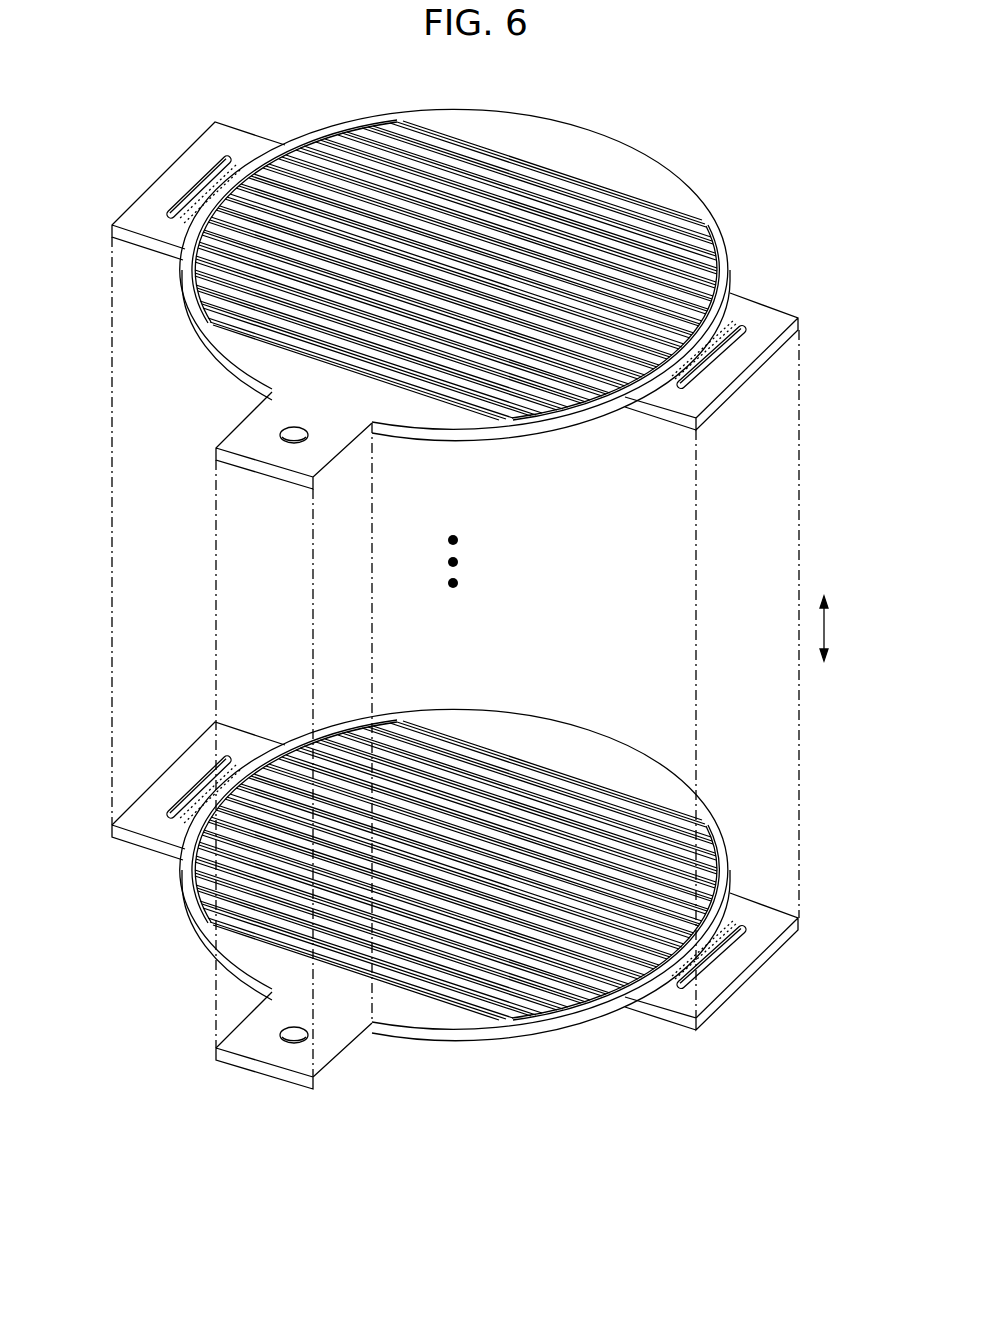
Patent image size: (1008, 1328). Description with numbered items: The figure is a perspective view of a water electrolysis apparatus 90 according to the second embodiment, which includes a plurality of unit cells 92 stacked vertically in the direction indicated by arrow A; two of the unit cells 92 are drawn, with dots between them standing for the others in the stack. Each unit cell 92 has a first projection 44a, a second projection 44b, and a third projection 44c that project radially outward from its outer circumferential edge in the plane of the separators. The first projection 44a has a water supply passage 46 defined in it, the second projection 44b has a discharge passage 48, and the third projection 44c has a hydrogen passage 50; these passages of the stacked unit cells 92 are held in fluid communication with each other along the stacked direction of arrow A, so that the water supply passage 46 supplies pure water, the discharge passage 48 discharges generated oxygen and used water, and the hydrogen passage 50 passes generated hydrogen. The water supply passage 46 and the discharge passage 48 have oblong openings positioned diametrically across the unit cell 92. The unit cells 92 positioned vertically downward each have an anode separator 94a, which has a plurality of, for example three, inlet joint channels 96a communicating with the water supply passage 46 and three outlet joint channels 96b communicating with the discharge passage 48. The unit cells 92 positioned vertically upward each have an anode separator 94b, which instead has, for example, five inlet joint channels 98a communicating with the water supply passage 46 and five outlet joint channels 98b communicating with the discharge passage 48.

The water electrolysis apparatus 90 is at (694, 96).
The unit cell 92 is at (768, 242).
The anode separator 94a is at (697, 786).
The anode separator 94b is at (697, 186).
The inlet joint channels 96a is at (248, 765).
The outlet joint channels 96b is at (683, 972).
The inlet joint channels 98a is at (248, 165).
The outlet joint channels 98b is at (683, 372).
The first projection 44a is at (130, 218).
The second projection 44b is at (704, 419).
The third projection 44c is at (233, 437).
The water supply passage 46 is at (173, 203).
The discharge passage 48 is at (700, 381).
The hydrogen passage 50 is at (295, 441).
The arrow A is at (836, 628).